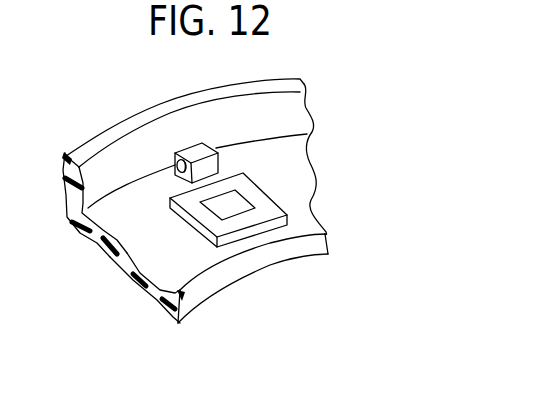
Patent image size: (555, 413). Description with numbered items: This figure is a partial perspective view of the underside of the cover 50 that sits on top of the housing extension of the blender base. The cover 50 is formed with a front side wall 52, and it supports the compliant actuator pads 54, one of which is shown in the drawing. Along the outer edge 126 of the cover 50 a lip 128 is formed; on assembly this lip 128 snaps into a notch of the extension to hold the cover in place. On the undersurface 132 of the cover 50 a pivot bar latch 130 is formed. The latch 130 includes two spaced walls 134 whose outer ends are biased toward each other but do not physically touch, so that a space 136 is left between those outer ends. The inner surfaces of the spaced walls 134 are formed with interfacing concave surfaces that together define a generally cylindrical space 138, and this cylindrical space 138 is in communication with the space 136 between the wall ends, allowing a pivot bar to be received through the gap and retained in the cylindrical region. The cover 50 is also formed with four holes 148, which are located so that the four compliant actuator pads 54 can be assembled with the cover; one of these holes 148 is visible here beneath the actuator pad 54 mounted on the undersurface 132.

The cover 50 is at (102, 118).
The front side wall 52 is at (67, 217).
The compliant actuator pad 54 is at (279, 192).
The outer edge 126 is at (138, 108).
The lip 128 is at (304, 82).
The pivot bar latch 130 is at (227, 161).
The undersurface 132 is at (130, 241).
The spaced walls 134 is at (177, 156).
The space 136 is at (189, 145).
The cylindrical space 138 is at (173, 170).
The holes 148 is at (232, 223).